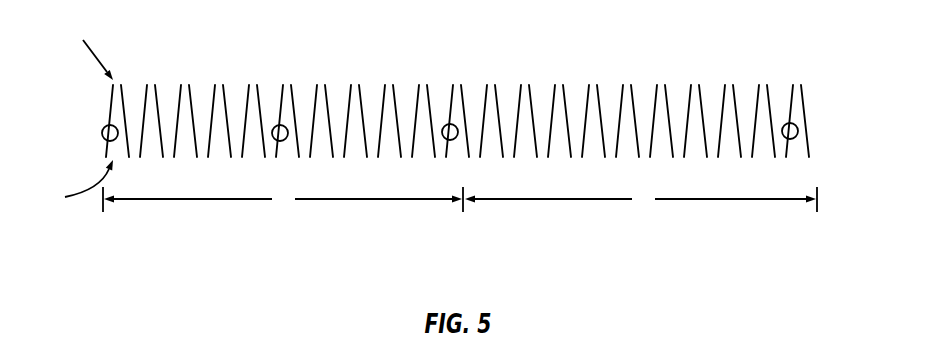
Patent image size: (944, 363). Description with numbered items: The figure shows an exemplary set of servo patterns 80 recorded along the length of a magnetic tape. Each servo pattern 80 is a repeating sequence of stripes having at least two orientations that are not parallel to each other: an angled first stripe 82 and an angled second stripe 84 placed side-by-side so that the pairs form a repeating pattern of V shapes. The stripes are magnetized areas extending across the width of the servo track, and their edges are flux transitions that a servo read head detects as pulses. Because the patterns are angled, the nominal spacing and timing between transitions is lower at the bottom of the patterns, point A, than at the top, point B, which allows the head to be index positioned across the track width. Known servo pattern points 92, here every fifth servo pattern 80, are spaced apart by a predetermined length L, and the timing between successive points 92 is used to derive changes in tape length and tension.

The servo patterns 80 is at (443, 90).
The first stripe 82 is at (112, 122).
The second stripe 84 is at (125, 98).
The servo pattern points 92 is at (272, 132).
The bottom point of servo pattern A is at (95, 47).
The top point of servo pattern B is at (81, 185).
The predetermined length of tape L is at (460, 200).